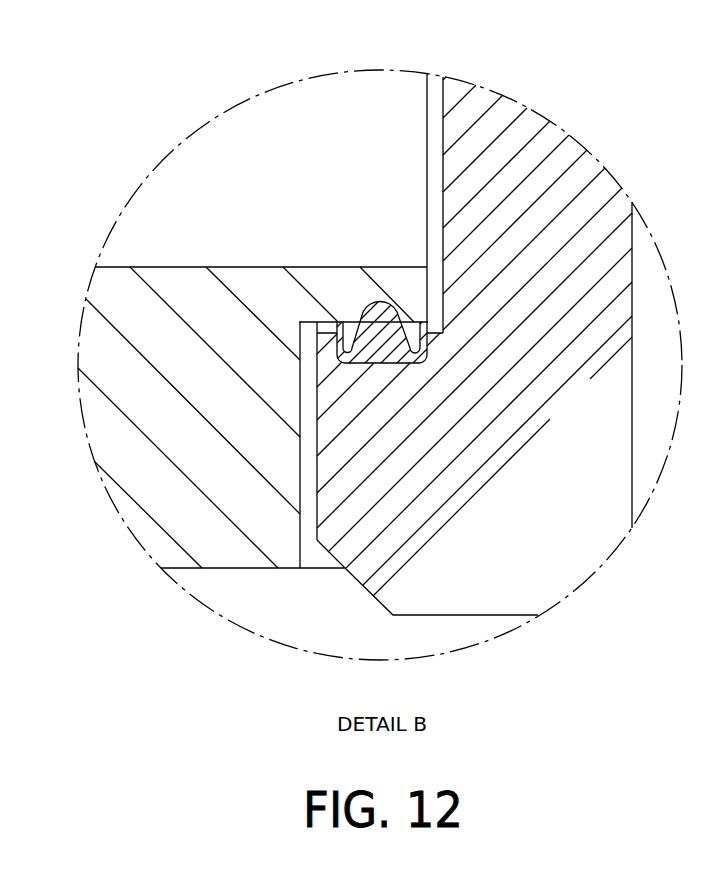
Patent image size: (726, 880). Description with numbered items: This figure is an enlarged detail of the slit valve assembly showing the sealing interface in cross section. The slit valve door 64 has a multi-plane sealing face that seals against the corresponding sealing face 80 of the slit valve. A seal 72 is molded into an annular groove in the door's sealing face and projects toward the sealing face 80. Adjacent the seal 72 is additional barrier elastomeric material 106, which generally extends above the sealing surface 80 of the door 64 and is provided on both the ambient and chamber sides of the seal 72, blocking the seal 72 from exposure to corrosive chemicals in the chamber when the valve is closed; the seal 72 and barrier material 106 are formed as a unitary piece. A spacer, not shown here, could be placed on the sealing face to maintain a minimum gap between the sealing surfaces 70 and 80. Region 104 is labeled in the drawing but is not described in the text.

The slit valve door 64 is at (588, 192).
The sealing surface 70 is at (316, 334).
The seal 72 is at (381, 302).
The sealing face 80 is at (307, 322).
The recess 104 is at (349, 322).
The barrier elastomeric material 106 is at (428, 333).